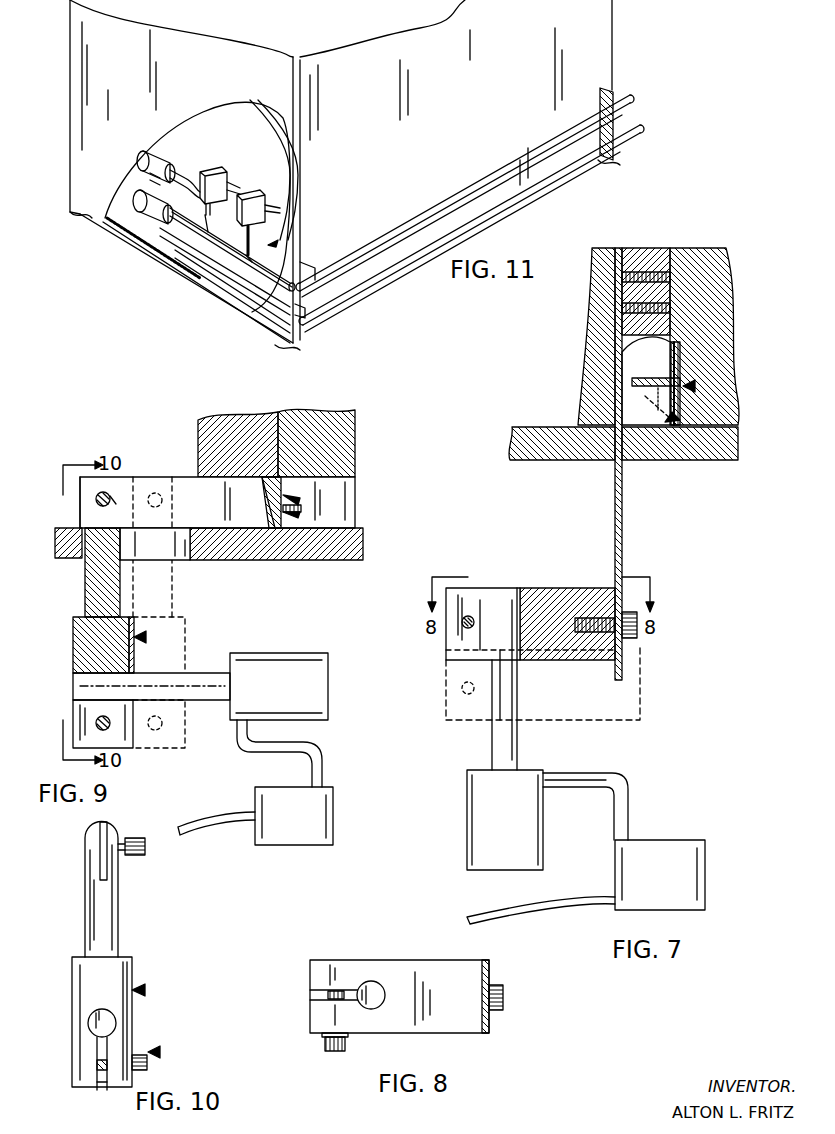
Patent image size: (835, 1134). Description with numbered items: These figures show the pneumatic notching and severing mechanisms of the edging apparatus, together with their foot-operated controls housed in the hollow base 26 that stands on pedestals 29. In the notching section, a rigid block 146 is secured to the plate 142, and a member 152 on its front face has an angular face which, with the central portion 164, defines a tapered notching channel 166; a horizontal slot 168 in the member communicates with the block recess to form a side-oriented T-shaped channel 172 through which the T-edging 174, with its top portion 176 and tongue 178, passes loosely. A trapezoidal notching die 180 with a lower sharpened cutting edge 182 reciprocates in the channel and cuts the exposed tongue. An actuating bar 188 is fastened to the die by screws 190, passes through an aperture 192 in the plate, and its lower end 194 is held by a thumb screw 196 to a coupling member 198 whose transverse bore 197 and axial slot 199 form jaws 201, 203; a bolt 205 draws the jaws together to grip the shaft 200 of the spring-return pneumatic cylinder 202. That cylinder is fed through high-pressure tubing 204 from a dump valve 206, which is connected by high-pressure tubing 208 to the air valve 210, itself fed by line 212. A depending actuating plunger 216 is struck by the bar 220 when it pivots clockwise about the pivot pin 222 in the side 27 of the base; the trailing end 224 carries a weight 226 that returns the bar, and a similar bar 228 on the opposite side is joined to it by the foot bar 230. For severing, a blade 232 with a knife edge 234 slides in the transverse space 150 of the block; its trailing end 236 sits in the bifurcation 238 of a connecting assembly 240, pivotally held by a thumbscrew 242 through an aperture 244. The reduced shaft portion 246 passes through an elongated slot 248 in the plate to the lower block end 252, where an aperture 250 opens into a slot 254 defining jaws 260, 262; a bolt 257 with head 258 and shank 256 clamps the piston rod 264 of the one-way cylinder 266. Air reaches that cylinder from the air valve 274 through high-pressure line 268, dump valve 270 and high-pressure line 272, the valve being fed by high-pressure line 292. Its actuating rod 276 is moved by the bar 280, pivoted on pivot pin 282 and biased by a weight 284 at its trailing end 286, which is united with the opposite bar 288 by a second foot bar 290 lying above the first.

In FIG. 11, the base 26 is at (612, 33).
In FIG. 11, the side of the base 27 is at (95, 88).
In FIG. 11, the pedestals 29 is at (70, 212).
In FIG. 7, the plate 142 is at (510, 437).
In FIG. 9, the plate 142 is at (333, 562).
In FIG. 7, the block 146 is at (730, 268).
In FIG. 9, the block 146 is at (245, 425).
In FIG. 9, the transverse space 150 is at (229, 530).
In FIG. 9, the member 152 is at (312, 420).
In FIG. 7, the central portion 164 is at (668, 250).
In FIG. 7, the tapered notching channel 166 is at (654, 455).
In FIG. 7, the slot 168 is at (630, 366).
In FIG. 9, the T-shaped channel 172 is at (300, 497).
In FIG. 7, the T-edging 174 is at (696, 386).
In FIG. 9, the T-edging 174 is at (302, 514).
In FIG. 7, the top portion 176 is at (681, 355).
In FIG. 7, the tongue 178 is at (640, 393).
In FIG. 7, the notching die 180 is at (640, 248).
In FIG. 7, the cutting edge 182 is at (616, 345).
In FIG. 7, the actuating bar 188 is at (615, 525).
In FIG. 8, the actuating bar 188 is at (482, 985).
In FIG. 7, the screws 190 is at (622, 308).
In FIG. 7, the aperture 192 is at (614, 462).
In FIG. 7, the lower end 194 is at (630, 680).
In FIG. 7, the thumb screw 196 is at (634, 640).
In FIG. 8, the thumb screw 196 is at (505, 996).
In FIG. 8, the transverse bore 197 is at (365, 984).
In FIG. 7, the coupling member 198 is at (572, 590).
In FIG. 8, the coupling member 198 is at (394, 972).
In FIG. 8, the axial slot 199 is at (310, 996).
In FIG. 7, the shaft 200 is at (500, 715).
In FIG. 8, the shaft 200 is at (380, 1006).
In FIG. 7, the jaw 201 is at (482, 595).
In FIG. 8, the jaw 201 is at (320, 968).
In FIG. 7, the pneumatic cylinder 202 is at (480, 786).
In FIG. 8, the jaw 203 is at (322, 1020).
In FIG. 7, the high-pressure tubing 204 is at (632, 806).
In FIG. 7, the bolt 205 is at (464, 625).
In FIG. 8, the bolt 205 is at (330, 1052).
In FIG. 7, the dump valve 206 is at (680, 846).
In FIG. 11, the high-pressure tubing 208 is at (272, 170).
In FIG. 7, the high-pressure tubing 208 is at (562, 906).
In FIG. 8, the high-pressure tubing 208 is at (615, 905).
In FIG. 11, the air valve 210 is at (280, 195).
In FIG. 11, the line 212 is at (282, 211).
In FIG. 11, the actuating plunger 216 is at (242, 268).
In FIG. 11, the bar 220 is at (228, 250).
In FIG. 11, the pivot pin 222 is at (266, 278).
In FIG. 11, the trailing end 224 is at (150, 232).
In FIG. 11, the weight 226 is at (145, 208).
In FIG. 11, the bar 228 is at (642, 126).
In FIG. 11, the foot bar 230 is at (552, 182).
In FIG. 9, the blade 232 is at (186, 496).
In FIG. 9, the knife edge 234 is at (274, 530).
In FIG. 9, the trailing end 236 is at (84, 478).
In FIG. 10, the trailing end 236 is at (100, 850).
In FIG. 9, the bifurcation 238 is at (80, 527).
In FIG. 10, the bifurcation 238 is at (110, 862).
In FIG. 9, the connecting assembly 240 is at (146, 637).
In FIG. 10, the connecting assembly 240 is at (145, 990).
In FIG. 9, the thumbscrew 242 is at (112, 500).
In FIG. 10, the thumbscrew 242 is at (148, 848).
In FIG. 9, the aperture 244 is at (108, 494).
In FIG. 9, the shaft portion 246 is at (86, 584).
In FIG. 10, the shaft portion 246 is at (112, 908).
In FIG. 9, the elongated slot 248 is at (189, 562).
In FIG. 9, the aperture 250 is at (78, 672).
In FIG. 10, the aperture 250 is at (116, 1018).
In FIG. 10, the lower block end 252 is at (126, 966).
In FIG. 10, the slot 254 is at (97, 1084).
In FIG. 9, the shank 256 is at (110, 728).
In FIG. 10, the shank 256 is at (103, 1086).
In FIG. 10, the bolt 257 is at (160, 1052).
In FIG. 10, the head 258 is at (148, 1066).
In FIG. 9, the jaw 260 is at (116, 750).
In FIG. 10, the jaw 260 is at (82, 1062).
In FIG. 10, the jaw 262 is at (116, 1062).
In FIG. 9, the piston rod 264 is at (210, 702).
In FIG. 10, the piston rod 264 is at (98, 1028).
In FIG. 9, the one-way cylinder 266 is at (326, 668).
In FIG. 11, the high-pressure line 268 is at (252, 134).
In FIG. 9, the high-pressure line 268 is at (232, 823).
In FIG. 9, the dump valve 270 is at (332, 818).
In FIG. 9, the high-pressure line 272 is at (266, 752).
In FIG. 11, the air valve 274 is at (206, 170).
In FIG. 11, the actuating rod 276 is at (207, 214).
In FIG. 11, the bar 280 is at (170, 160).
In FIG. 11, the pivot pin 282 is at (276, 243).
In FIG. 11, the weight 284 is at (140, 151).
In FIG. 11, the trailing end 286 is at (150, 176).
In FIG. 11, the bar 288 is at (628, 94).
In FIG. 11, the foot bar 290 is at (470, 190).
In FIG. 11, the high-pressure line 292 is at (256, 190).